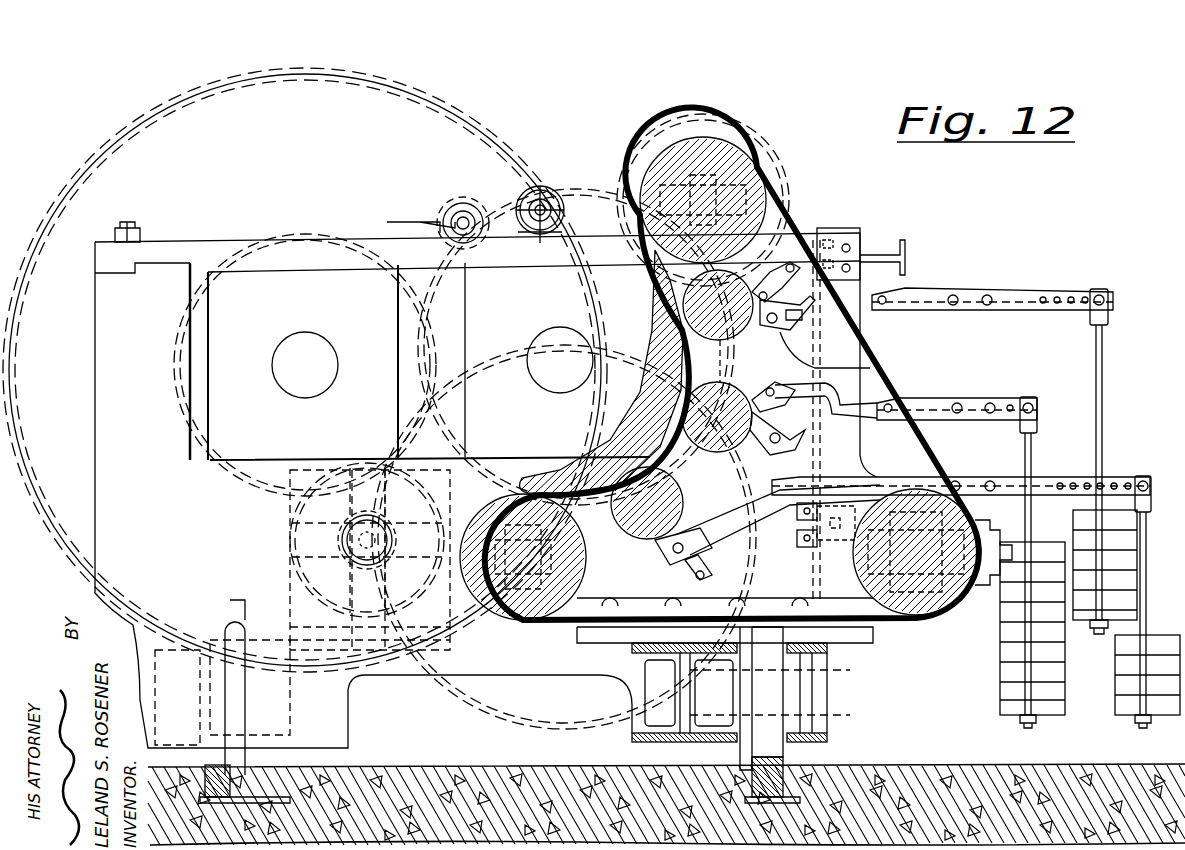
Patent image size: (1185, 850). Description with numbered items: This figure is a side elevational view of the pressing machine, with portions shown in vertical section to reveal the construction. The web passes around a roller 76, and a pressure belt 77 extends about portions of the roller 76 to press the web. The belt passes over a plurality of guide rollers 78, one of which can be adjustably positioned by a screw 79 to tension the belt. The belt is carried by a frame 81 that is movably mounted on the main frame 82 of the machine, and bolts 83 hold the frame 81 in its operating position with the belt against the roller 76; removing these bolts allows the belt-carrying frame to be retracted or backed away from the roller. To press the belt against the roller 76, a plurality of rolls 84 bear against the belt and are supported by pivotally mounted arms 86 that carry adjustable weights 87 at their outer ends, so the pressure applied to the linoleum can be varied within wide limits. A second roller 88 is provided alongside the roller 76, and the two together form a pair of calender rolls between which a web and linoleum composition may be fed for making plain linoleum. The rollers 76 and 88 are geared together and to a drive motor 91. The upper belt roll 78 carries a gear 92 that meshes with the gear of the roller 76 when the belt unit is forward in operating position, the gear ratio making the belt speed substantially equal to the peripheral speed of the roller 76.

The roller 76 is at (645, 408).
The pressure belt 77 is at (878, 380).
The guide rollers 78 is at (748, 162).
The screw 79 is at (1003, 548).
The frame 81 is at (885, 398).
The main frame 82 is at (215, 519).
The bolts 83 is at (840, 232).
The rolls 84 is at (735, 390).
The pivotally mounted arms 86 is at (790, 305).
The adjustable weights 87 is at (1080, 519).
The second roller 88 is at (410, 343).
The drive motor 91 is at (300, 548).
The gear 92 is at (657, 130).